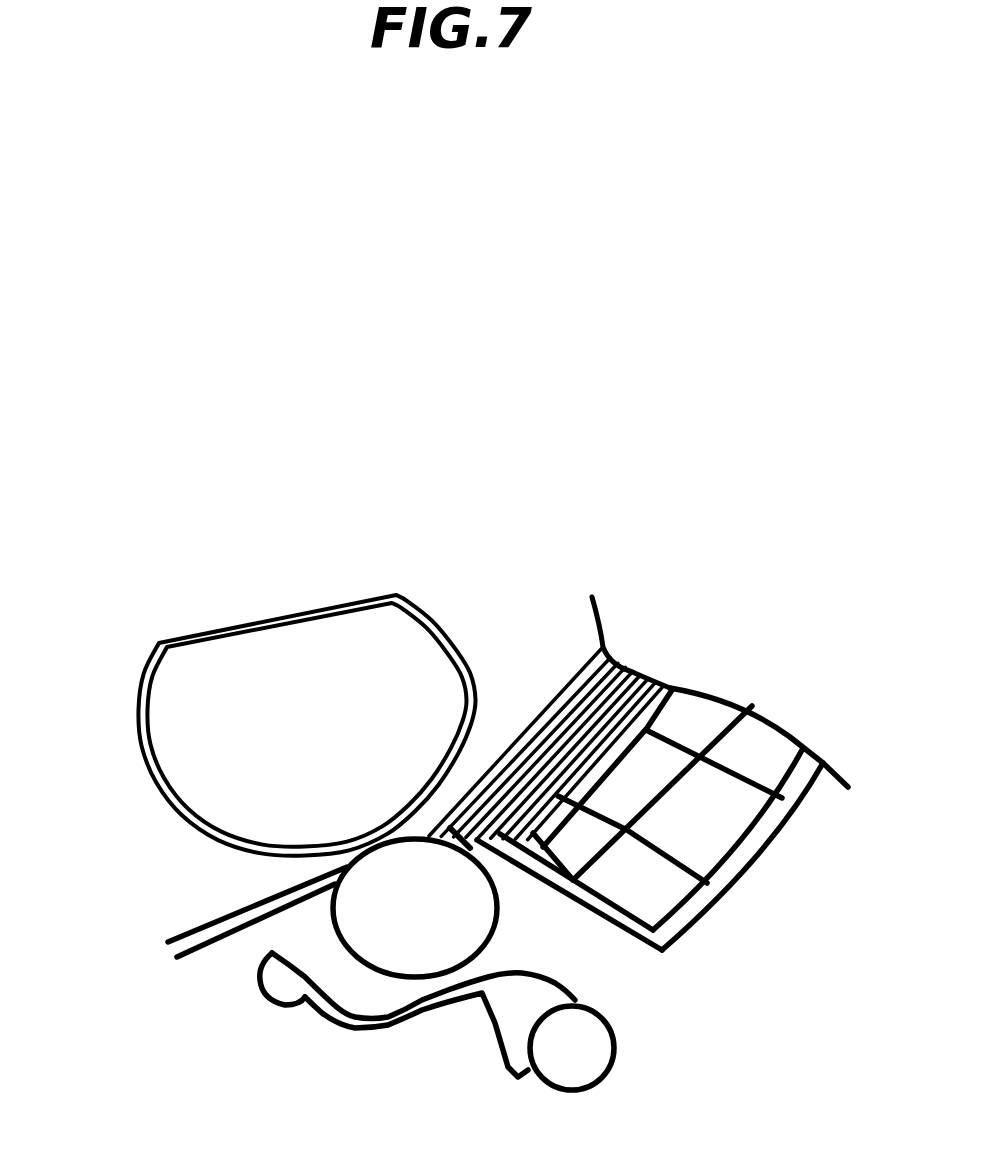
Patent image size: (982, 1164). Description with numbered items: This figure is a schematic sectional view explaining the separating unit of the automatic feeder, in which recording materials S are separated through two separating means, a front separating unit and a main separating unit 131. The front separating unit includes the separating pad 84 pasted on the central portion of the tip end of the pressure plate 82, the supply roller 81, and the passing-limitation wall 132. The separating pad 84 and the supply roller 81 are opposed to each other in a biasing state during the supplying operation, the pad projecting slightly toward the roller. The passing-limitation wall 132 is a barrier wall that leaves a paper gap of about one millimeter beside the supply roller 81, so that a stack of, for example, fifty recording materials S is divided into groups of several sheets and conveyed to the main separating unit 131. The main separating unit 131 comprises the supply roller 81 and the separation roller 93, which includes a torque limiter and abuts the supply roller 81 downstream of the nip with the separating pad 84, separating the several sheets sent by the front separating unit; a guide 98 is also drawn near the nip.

The supply roller 81 is at (253, 658).
The sheet S is at (557, 688).
The pressure plate 82 is at (788, 800).
The separating pad 84 is at (718, 892).
The separation roller 93 is at (382, 943).
The guide plate 98 is at (363, 853).
The main separating unit 131 is at (363, 832).
The passing-limitation wall 132 is at (467, 853).